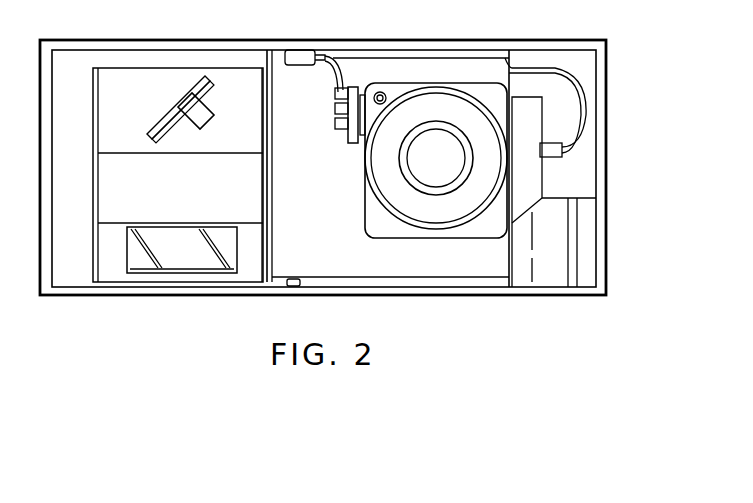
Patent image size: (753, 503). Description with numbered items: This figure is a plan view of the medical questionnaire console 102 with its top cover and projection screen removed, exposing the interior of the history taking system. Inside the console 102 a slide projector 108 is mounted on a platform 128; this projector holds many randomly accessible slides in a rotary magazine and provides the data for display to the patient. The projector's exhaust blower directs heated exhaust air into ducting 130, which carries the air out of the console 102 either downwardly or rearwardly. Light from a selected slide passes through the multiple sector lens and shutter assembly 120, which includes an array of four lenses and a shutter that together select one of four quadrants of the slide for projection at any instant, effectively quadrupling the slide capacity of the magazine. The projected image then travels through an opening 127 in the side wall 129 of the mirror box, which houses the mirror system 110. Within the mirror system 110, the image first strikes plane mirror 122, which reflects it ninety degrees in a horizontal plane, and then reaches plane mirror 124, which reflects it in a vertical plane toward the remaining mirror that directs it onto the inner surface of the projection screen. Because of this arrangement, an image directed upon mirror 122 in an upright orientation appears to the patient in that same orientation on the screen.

The medical questionnaire console 102 is at (613, 122).
The slide projector 108 is at (447, 122).
The mirror system 110 is at (113, 258).
The lens and shutter assembly 120 is at (352, 146).
The plane mirror 122 is at (208, 88).
The plane mirror 124 is at (188, 254).
The opening 127 is at (270, 105).
The platform 128 is at (380, 274).
The side wall 129 is at (272, 232).
The ducting 130 is at (580, 252).